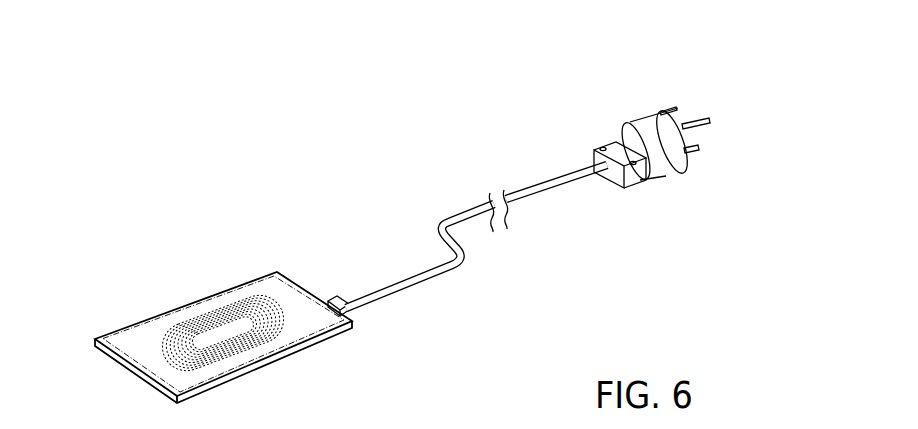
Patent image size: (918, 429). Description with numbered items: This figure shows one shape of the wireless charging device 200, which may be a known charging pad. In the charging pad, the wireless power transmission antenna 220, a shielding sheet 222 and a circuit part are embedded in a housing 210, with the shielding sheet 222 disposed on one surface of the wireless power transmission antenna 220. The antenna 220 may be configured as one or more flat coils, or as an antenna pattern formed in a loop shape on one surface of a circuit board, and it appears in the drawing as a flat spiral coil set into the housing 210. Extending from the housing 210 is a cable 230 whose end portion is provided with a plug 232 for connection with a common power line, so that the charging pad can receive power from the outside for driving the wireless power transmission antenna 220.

The wireless charging device 200 is at (278, 195).
The housing 210 is at (140, 319).
The wireless power transmission antenna 220 is at (274, 339).
The shielding sheet 222 is at (355, 322).
The cable 230 is at (530, 192).
The plug 232 is at (641, 116).